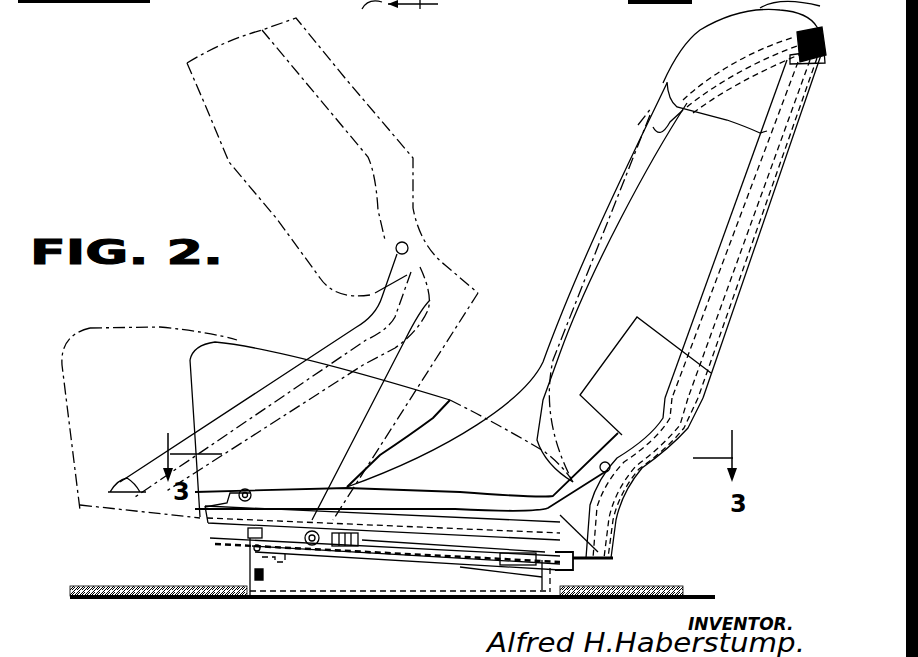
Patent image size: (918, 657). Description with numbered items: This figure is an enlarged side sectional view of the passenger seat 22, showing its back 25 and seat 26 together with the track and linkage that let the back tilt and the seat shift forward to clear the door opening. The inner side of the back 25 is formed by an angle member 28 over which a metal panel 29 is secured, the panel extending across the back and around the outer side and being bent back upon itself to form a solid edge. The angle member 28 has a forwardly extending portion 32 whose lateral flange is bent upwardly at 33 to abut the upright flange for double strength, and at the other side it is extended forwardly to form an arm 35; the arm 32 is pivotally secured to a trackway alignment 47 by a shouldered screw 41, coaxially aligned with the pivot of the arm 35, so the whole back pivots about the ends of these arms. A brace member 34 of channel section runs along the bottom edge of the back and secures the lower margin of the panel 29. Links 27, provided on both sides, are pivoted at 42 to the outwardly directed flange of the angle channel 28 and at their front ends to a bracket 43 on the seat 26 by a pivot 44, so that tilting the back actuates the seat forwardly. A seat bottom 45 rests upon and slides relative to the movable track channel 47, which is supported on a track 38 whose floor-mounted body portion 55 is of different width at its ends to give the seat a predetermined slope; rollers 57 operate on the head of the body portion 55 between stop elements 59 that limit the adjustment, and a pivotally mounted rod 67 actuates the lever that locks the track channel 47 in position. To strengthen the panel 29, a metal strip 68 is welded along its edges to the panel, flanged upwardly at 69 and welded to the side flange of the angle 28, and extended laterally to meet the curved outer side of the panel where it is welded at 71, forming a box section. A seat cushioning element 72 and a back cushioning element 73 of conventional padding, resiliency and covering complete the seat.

The passenger seat 22 is at (232, 105).
The back 25 is at (672, 332).
The seat 26 is at (228, 348).
The links 27 is at (345, 335).
The angle member 28 is at (365, 100).
The metal panel 29 is at (700, 408).
The forwardly extending portion 32 is at (377, 396).
The upwardly bent flange 33 is at (608, 498).
The brace member 34 is at (555, 538).
The arm 35 is at (523, 398).
The track 38 is at (292, 567).
The shouldered screw 41 is at (308, 548).
The link pivot 42 is at (605, 465).
The bracket 43 is at (238, 493).
The pivot 44 is at (256, 490).
The seat bottom 45 is at (207, 517).
The track channel 47 is at (575, 568).
The body portion 55 is at (392, 574).
The rollers 57 is at (483, 572).
The stop elements 59 is at (246, 546).
The pivotally mounted rod 67 is at (255, 574).
The metal strip 68 is at (665, 405).
The upward flange of strip 69 is at (650, 415).
The welded edge 71 is at (583, 395).
The seat cushioning element 72 is at (436, 386).
The back cushioning element 73 is at (667, 82).